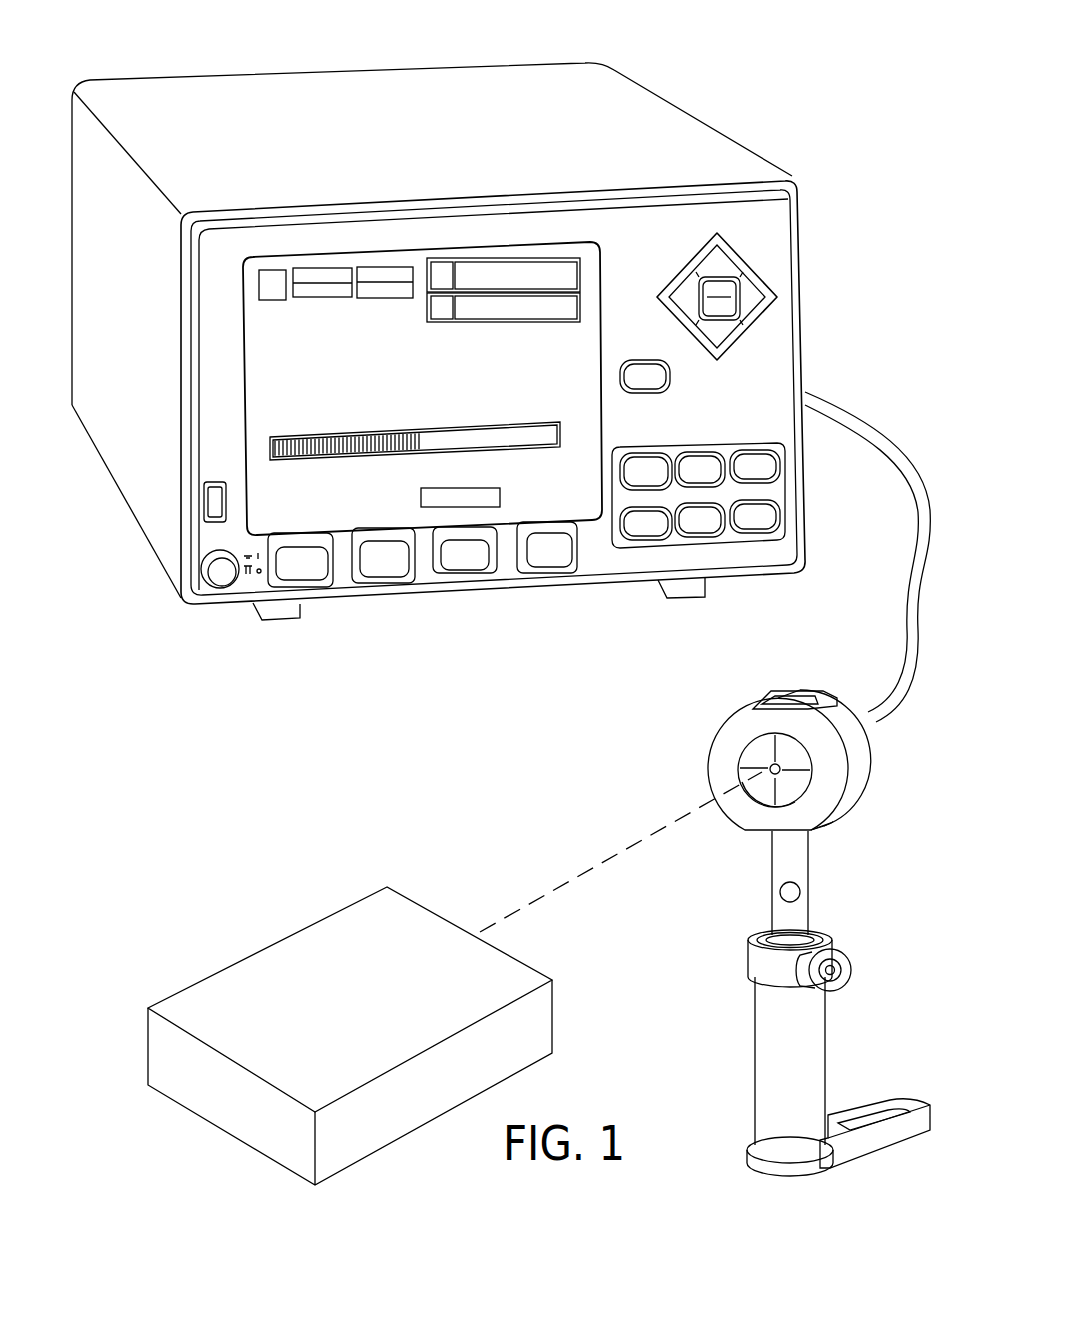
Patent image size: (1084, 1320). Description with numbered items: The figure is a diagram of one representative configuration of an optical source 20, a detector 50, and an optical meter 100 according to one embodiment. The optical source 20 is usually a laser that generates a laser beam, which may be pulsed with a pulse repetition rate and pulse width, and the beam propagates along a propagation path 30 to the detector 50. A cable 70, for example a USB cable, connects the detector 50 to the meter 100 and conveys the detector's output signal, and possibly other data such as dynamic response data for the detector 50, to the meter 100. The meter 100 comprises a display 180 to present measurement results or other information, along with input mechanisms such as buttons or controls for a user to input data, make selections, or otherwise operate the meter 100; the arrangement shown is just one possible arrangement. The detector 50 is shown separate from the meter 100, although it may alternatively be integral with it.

The optical meter 100 is at (398, 158).
The display 180 is at (337, 472).
The cable 70 is at (858, 418).
The detector 50 is at (743, 722).
The propagation path 30 is at (598, 863).
The optical source 20 is at (368, 1030).